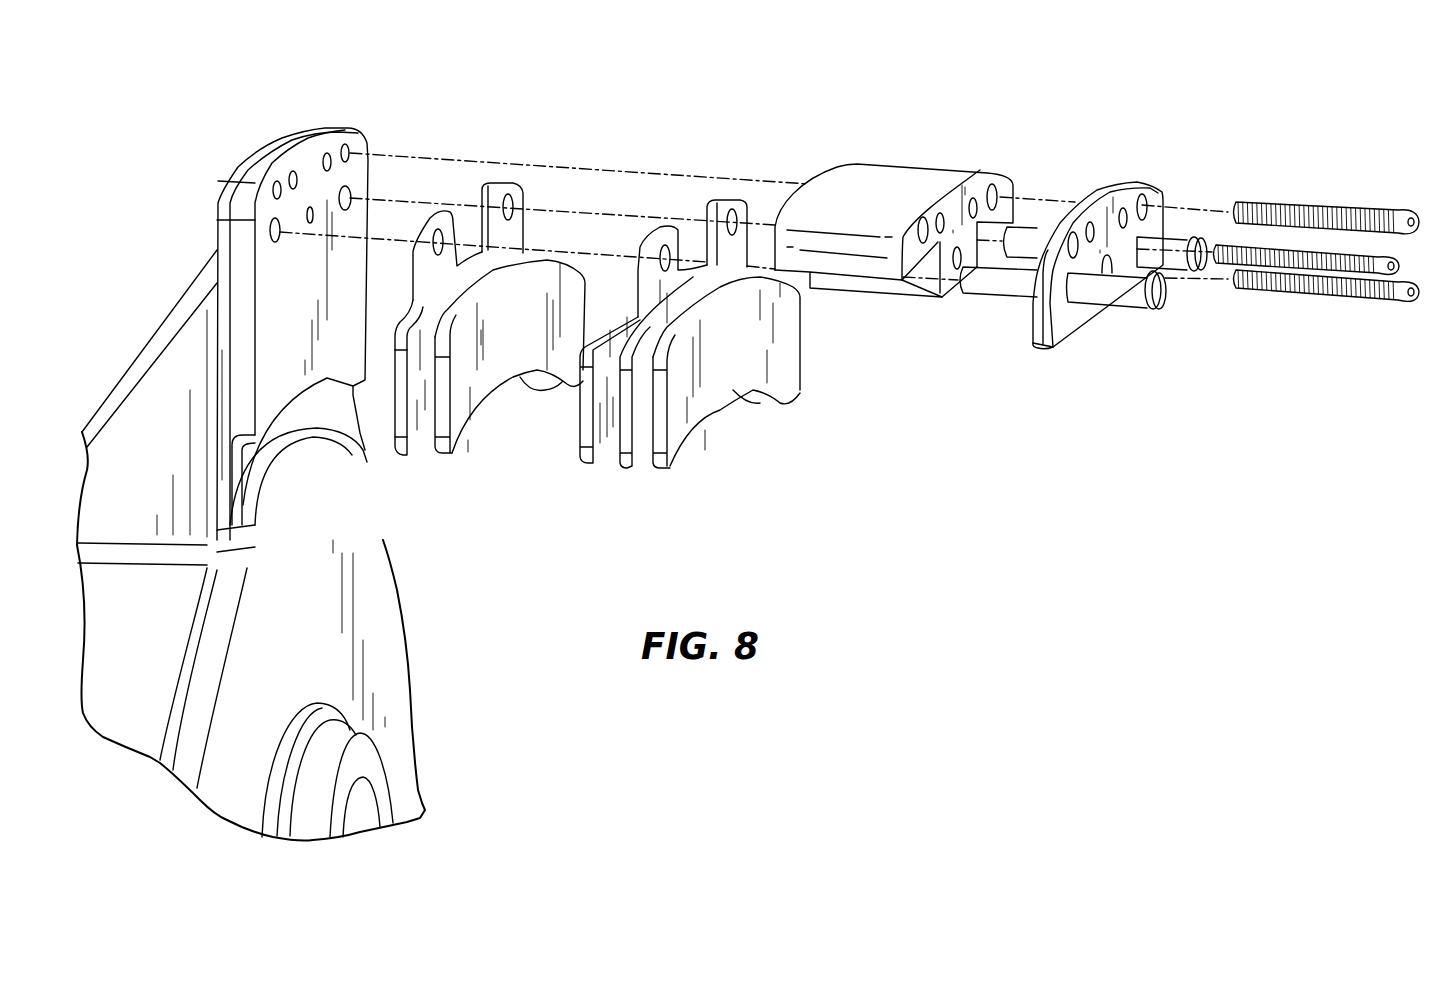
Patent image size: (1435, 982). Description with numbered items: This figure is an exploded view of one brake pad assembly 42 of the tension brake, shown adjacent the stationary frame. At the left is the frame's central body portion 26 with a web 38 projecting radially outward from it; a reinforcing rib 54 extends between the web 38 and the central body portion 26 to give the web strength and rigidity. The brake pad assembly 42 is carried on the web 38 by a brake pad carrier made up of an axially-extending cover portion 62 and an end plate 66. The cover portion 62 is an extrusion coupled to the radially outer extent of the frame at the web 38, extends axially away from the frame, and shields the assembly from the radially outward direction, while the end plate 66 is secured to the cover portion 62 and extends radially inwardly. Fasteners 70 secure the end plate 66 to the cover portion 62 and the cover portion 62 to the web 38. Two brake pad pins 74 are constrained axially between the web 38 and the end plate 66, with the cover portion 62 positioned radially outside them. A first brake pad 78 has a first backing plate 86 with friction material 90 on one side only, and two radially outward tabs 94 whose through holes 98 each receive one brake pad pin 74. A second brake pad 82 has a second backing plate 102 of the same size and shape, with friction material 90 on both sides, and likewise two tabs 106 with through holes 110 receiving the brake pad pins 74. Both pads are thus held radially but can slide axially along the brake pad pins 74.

The central body portion 26 is at (123, 587).
The web 38 is at (248, 163).
The brake pad assembly 42 is at (360, 88).
The reinforcing rib 54 is at (158, 393).
The cover portion 62 is at (878, 178).
The end plate 66 is at (1035, 332).
The fasteners 70 is at (1323, 207).
The brake pad pins 74 is at (1170, 240).
The first brake pad 78 is at (608, 404).
The second brake pad 82 is at (750, 460).
The first backing plate 86 is at (487, 314).
The friction material 90 is at (487, 378).
The tabs 94 is at (423, 218).
The through holes 98 is at (440, 232).
The second backing plate 102 is at (694, 328).
The tabs 106 is at (643, 230).
The through holes 110 is at (664, 250).